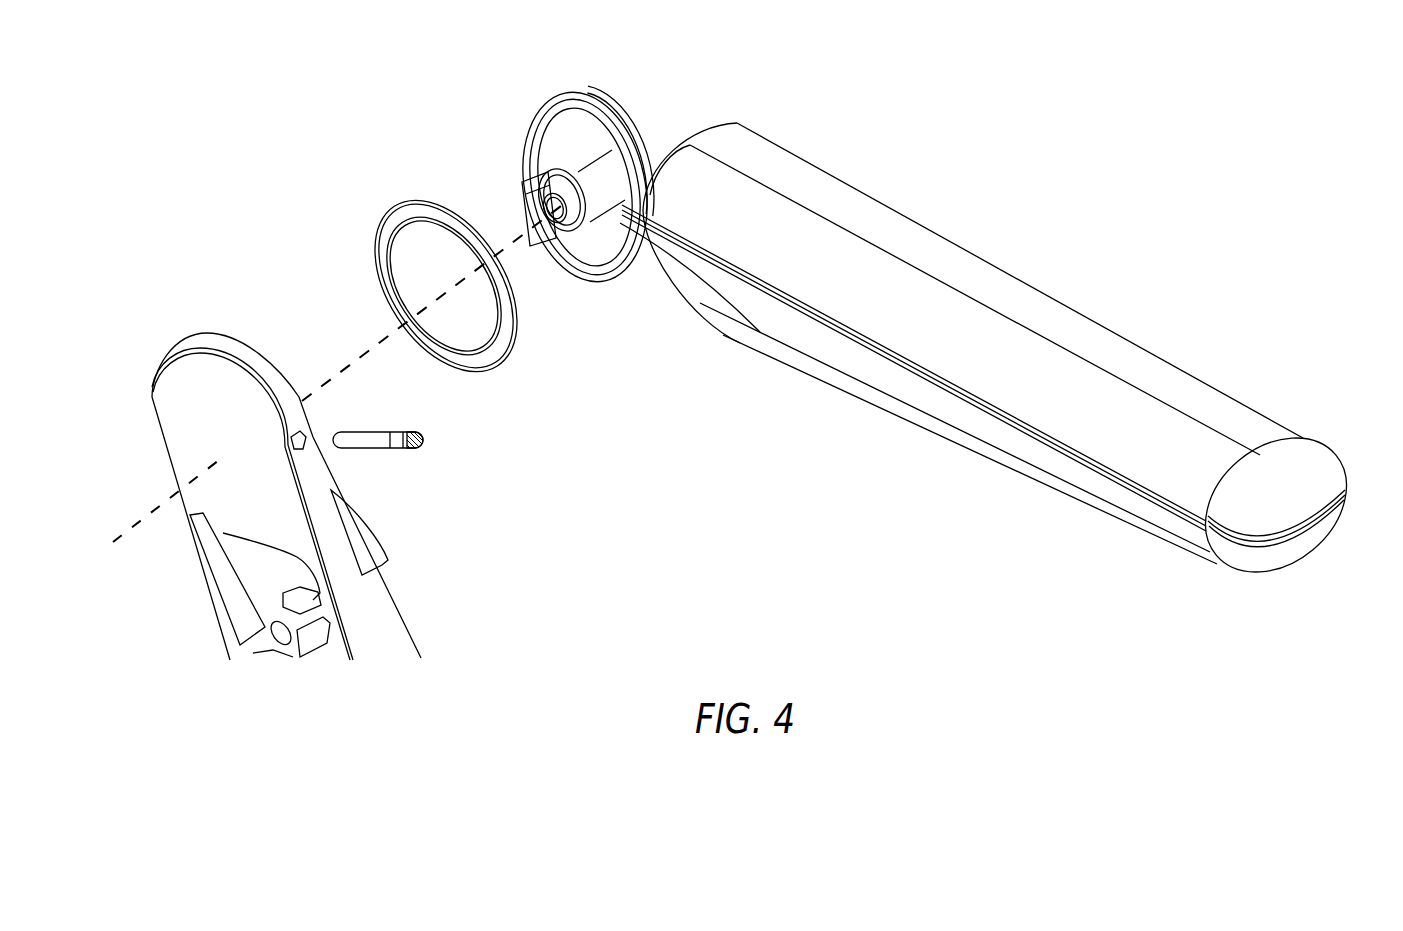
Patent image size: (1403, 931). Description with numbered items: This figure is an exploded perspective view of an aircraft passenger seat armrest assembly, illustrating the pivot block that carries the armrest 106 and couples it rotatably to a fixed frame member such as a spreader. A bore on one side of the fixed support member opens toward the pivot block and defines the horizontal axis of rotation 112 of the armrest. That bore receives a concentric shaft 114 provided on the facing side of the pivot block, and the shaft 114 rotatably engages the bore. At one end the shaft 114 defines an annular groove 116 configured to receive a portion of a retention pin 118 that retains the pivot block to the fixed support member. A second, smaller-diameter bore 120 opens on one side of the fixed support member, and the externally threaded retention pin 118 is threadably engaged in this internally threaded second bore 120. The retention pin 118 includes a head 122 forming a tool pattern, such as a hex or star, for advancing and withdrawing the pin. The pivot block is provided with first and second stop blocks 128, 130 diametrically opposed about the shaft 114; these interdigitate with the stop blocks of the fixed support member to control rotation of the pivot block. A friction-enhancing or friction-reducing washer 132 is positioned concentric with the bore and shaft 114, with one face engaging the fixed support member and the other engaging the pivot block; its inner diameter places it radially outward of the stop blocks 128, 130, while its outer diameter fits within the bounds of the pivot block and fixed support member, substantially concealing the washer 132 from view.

The armrest 106 is at (847, 185).
The horizontal axis of rotation 112 is at (142, 520).
The shaft 114 is at (552, 193).
The annular groove 116 is at (570, 195).
The retention pin 118 is at (360, 448).
The second bore 120 is at (304, 436).
The head 122 is at (405, 448).
The first stop block 128 is at (525, 210).
The second stop block 130 is at (607, 178).
The washer 132 is at (392, 207).